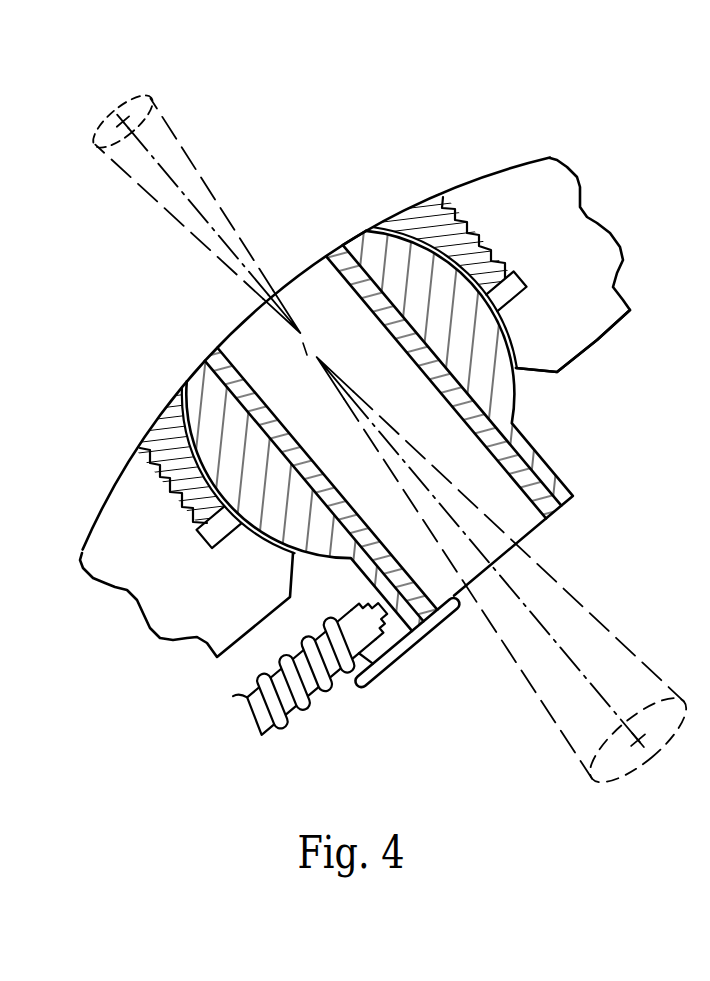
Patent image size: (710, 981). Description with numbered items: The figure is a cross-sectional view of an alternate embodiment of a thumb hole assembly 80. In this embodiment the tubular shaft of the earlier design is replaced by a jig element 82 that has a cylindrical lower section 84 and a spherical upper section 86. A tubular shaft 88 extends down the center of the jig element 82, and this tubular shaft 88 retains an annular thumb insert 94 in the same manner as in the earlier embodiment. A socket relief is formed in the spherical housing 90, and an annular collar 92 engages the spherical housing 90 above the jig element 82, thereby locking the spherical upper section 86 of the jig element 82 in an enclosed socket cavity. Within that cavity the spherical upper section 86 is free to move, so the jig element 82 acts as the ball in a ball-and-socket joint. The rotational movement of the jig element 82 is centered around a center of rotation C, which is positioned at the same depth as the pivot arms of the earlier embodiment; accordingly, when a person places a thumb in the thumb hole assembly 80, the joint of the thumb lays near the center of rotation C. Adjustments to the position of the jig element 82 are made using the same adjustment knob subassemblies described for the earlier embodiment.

The thumb hole assembly 80 is at (300, 104).
The jig element 82 is at (517, 388).
The cylindrical lower section 84 is at (543, 463).
The spherical upper section 86 is at (492, 342).
The tubular shaft 88 is at (357, 250).
The spherical housing 90 is at (505, 185).
The annular collar 92 is at (167, 418).
The annular thumb insert 94 is at (278, 427).
The center of rotation C is at (306, 349).